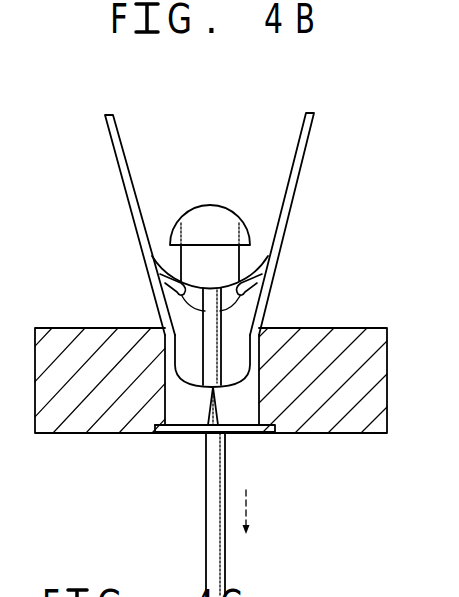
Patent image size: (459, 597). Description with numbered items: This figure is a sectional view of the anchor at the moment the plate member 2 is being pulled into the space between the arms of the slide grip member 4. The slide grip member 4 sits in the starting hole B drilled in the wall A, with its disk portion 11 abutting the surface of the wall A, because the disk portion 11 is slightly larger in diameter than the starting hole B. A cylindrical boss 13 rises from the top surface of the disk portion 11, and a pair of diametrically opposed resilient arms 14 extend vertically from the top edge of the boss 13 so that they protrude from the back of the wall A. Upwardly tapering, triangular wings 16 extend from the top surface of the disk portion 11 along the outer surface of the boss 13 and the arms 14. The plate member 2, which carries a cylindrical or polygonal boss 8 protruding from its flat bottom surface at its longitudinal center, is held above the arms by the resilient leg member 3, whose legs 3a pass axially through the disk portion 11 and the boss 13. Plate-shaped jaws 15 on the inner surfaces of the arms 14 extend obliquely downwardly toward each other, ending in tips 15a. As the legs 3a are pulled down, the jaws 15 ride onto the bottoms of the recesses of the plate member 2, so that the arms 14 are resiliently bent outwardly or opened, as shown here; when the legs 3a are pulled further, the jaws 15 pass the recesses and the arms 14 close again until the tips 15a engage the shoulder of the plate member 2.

The plate member 2 is at (208, 215).
The resilient leg member 3 is at (213, 515).
The legs 3a is at (207, 528).
The slide grip member 4 is at (265, 318).
The boss 8 is at (250, 264).
The disk portion 11 is at (185, 432).
The cylindrical boss 13 is at (245, 392).
The resilient arms 14 is at (127, 183).
The jaws 15 is at (165, 294).
The tips of the jaws 15a is at (225, 312).
The triangular wings 16 is at (218, 412).
The wall A is at (333, 420).
The starting hole B is at (150, 420).